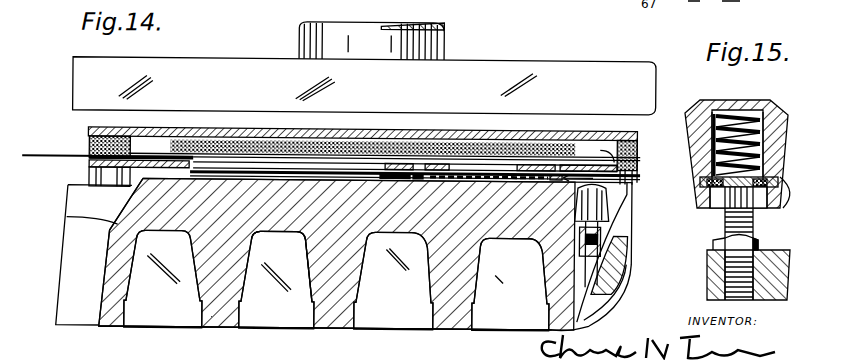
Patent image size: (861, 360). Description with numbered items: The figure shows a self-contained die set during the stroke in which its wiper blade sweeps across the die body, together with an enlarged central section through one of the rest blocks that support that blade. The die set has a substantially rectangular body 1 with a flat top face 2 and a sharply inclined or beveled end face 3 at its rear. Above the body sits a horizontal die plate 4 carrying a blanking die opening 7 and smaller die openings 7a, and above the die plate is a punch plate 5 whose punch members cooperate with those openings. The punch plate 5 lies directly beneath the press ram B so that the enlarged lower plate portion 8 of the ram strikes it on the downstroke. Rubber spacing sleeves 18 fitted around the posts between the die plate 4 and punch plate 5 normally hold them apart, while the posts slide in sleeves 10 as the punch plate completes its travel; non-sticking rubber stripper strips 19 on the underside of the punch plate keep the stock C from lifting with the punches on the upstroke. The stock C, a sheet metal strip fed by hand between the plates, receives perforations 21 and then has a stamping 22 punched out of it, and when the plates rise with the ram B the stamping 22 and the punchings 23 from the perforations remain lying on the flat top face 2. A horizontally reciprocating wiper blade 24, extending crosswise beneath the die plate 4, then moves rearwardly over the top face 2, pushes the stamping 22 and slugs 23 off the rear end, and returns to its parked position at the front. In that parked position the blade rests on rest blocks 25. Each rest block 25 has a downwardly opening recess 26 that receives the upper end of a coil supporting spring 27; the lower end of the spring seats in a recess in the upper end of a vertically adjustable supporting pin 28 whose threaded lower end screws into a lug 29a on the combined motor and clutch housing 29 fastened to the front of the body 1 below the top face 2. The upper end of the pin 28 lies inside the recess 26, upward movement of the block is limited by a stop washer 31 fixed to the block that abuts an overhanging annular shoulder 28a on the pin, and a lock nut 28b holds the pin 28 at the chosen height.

In FIG. 14, the body 1 is at (216, 327).
In FIG. 14, the flat top face 2 is at (399, 172).
In FIG. 14, the beveled end face 3 is at (68, 217).
In FIG. 14, the die plate 4 is at (89, 166).
In FIG. 14, the punch plate 5 is at (151, 133).
In FIG. 14, the blanking die opening 7 is at (232, 163).
In FIG. 14, the die openings 7a is at (432, 175).
In FIG. 14, the lower plate portion 8 is at (545, 99).
In FIG. 14, the sleeves 10 is at (109, 181).
In FIG. 14, the rubber spacing sleeve 18 is at (110, 143).
In FIG. 14, the rubber stripper strips 19 is at (326, 146).
In FIG. 14, the perforations 21 is at (546, 171).
In FIG. 14, the stamping 22 is at (297, 181).
In FIG. 14, the punchings 23 is at (487, 180).
In FIG. 14, the wiper blade 24 is at (527, 180).
In FIG. 14, the rest blocks 25 is at (588, 158).
In FIG. 15, the rest blocks 25 is at (707, 112).
In FIG. 15, the downwardly opening recess 26 is at (714, 130).
In FIG. 15, the coil supporting spring 27 is at (710, 162).
In FIG. 14, the supporting pin 28 is at (584, 284).
In FIG. 15, the supporting pin 28 is at (725, 226).
In FIG. 15, the annular shoulder 28a is at (795, 204).
In FIG. 15, the lock nut 28b is at (713, 245).
In FIG. 14, the motor and clutch housing 29 is at (629, 231).
In FIG. 14, the lug 29a is at (580, 250).
In FIG. 15, the lug 29a is at (708, 274).
In FIG. 15, the stop washer 31 is at (710, 186).
In FIG. 14, the ram B is at (445, 51).
In FIG. 14, the stock C is at (55, 155).